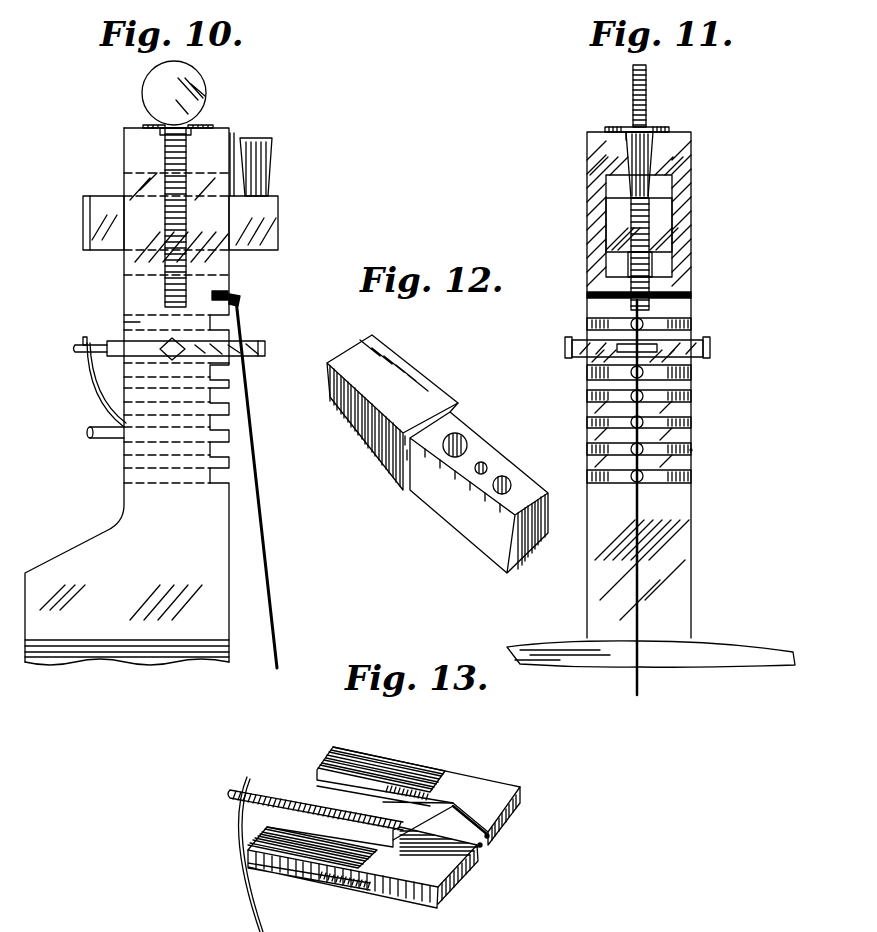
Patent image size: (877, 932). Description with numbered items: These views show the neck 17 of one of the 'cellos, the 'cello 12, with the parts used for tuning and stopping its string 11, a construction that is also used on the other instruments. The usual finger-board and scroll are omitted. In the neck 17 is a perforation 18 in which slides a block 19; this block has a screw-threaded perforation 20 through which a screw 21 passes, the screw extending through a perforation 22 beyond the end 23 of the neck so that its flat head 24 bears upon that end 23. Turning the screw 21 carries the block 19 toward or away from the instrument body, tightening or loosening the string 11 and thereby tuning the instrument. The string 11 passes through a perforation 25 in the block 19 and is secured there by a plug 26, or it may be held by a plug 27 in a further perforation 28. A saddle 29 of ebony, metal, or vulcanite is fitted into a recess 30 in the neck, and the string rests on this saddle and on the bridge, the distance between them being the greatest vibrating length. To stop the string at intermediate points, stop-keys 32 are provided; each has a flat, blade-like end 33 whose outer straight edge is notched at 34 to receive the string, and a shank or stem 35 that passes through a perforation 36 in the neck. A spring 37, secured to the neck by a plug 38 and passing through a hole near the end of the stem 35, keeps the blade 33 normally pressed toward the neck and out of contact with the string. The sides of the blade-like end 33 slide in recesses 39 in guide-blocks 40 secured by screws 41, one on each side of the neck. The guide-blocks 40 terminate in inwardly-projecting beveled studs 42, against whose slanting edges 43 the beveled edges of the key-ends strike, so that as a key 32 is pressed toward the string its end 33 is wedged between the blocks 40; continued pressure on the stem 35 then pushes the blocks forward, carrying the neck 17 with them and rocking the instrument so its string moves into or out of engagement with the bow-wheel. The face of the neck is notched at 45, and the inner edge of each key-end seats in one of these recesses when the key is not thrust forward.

In FIG. 10, the string 11 is at (270, 562).
In FIG. 11, the string 11 is at (640, 605).
In FIG. 10, the 'cello 12 is at (127, 625).
In FIG. 11, the 'cello 12 is at (720, 655).
In FIG. 10, the neck 17 is at (127, 395).
In FIG. 11, the neck 17 is at (639, 385).
In FIG. 10, the perforation 18 is at (138, 277).
In FIG. 11, the perforation 18 is at (608, 175).
In FIG. 10, the block 19 is at (110, 205).
In FIG. 11, the block 19 is at (620, 228).
In FIG. 12, the block 19 is at (437, 454).
In FIG. 11, the screw-threaded perforation 20 is at (645, 207).
In FIG. 12, the screw-threaded perforation 20 is at (462, 440).
In FIG. 10, the screw 21 is at (170, 143).
In FIG. 11, the screw 21 is at (655, 265).
In FIG. 10, the perforation 22 is at (187, 152).
In FIG. 11, the perforation 22 is at (628, 140).
In FIG. 11, the end 23 is at (680, 130).
In FIG. 10, the flat head 24 is at (213, 127).
In FIG. 11, the flat head 24 is at (650, 127).
In FIG. 12, the perforation 25 is at (487, 464).
In FIG. 10, the plug 26 is at (234, 140).
In FIG. 10, the plug 27 is at (257, 148).
In FIG. 11, the plug 27 is at (640, 165).
In FIG. 12, the perforation 28 is at (512, 481).
In FIG. 10, the saddle 29 is at (240, 300).
In FIG. 11, the saddle 29 is at (684, 300).
In FIG. 10, the recess 30 is at (212, 296).
In FIG. 10, the stop-key 32 is at (230, 371).
In FIG. 13, the stop-key 32 is at (423, 823).
In FIG. 13, the blade-like end 33 is at (490, 838).
In FIG. 13, the notch 34 is at (482, 848).
In FIG. 10, the shank or stem 35 is at (75, 348).
In FIG. 13, the shank or stem 35 is at (277, 793).
In FIG. 10, the perforation 36 is at (135, 323).
In FIG. 11, the perforation 36 is at (650, 430).
In FIG. 10, the spring 37 is at (92, 384).
In FIG. 13, the spring 37 is at (237, 879).
In FIG. 10, the plug 38 is at (90, 433).
In FIG. 13, the recess 39 is at (363, 783).
In FIG. 10, the guide-block 40 is at (265, 352).
In FIG. 11, the guide-block 40 is at (695, 360).
In FIG. 13, the guide-block 40 is at (433, 778).
In FIG. 10, the screw 41 is at (265, 345).
In FIG. 11, the screw 41 is at (710, 350).
In FIG. 13, the beveled stud 42 is at (520, 795).
In FIG. 13, the slanting edge 43 is at (497, 822).
In FIG. 10, the notch or groove 45 is at (218, 480).
In FIG. 11, the notch or groove 45 is at (693, 423).